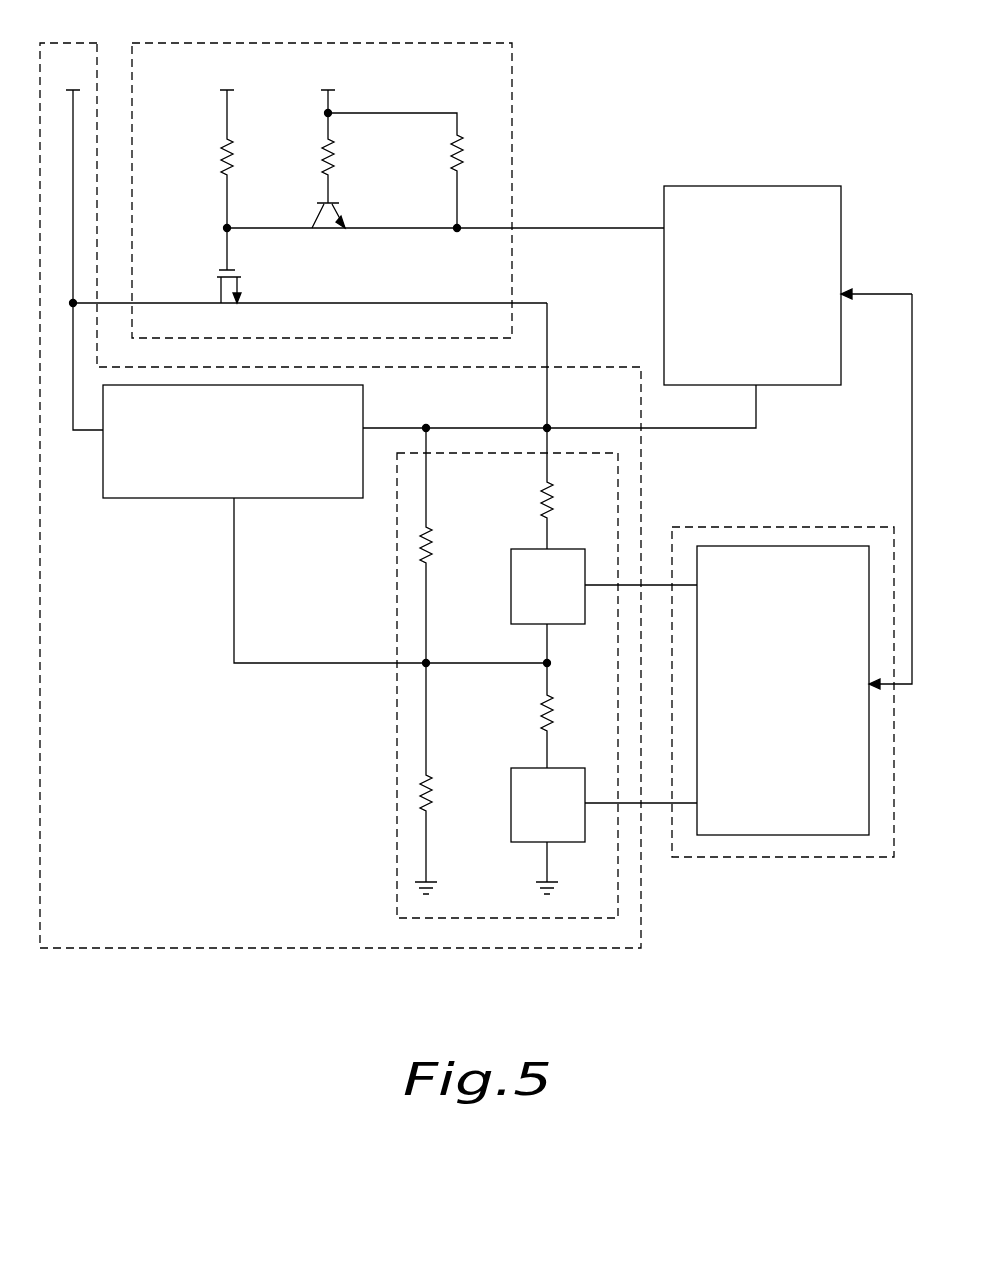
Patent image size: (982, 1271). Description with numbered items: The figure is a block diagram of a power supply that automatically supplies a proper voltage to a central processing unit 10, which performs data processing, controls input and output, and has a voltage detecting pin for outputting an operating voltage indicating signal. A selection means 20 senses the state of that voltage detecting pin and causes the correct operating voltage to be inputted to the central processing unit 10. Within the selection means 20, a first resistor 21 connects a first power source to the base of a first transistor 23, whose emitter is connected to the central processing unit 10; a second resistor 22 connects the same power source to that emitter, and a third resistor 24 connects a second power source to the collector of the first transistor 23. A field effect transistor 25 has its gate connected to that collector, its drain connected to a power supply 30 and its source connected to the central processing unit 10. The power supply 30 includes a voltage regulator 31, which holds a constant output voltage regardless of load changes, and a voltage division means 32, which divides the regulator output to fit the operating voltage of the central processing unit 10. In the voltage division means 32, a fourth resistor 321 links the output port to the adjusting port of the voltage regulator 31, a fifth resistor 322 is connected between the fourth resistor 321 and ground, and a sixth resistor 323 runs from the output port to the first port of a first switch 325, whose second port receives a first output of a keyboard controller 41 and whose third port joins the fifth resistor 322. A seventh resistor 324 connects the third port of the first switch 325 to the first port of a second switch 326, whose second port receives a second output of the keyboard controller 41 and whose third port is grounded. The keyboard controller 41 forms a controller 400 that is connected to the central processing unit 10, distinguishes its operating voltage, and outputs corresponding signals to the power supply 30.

The central processing unit 10 is at (750, 186).
The selection means 20 is at (405, 43).
The power supply 30 is at (70, 43).
The voltage regulator 31 is at (163, 500).
The voltage division means 32 is at (397, 585).
The controller 400 is at (770, 527).
The keyboard controller 41 is at (808, 835).
The first resistor 21 is at (305, 146).
The second resistor 22 is at (395, 170).
The first transistor 23 is at (327, 234).
The third resistor 24 is at (203, 159).
The field effect transistor 25 is at (310, 281).
The fourth resistor 321 is at (455, 545).
The fifth resistor 322 is at (454, 778).
The sixth resistor 323 is at (519, 426).
The seventh resistor 324 is at (519, 715).
The first switch 325 is at (604, 591).
The second switch 326 is at (604, 816).